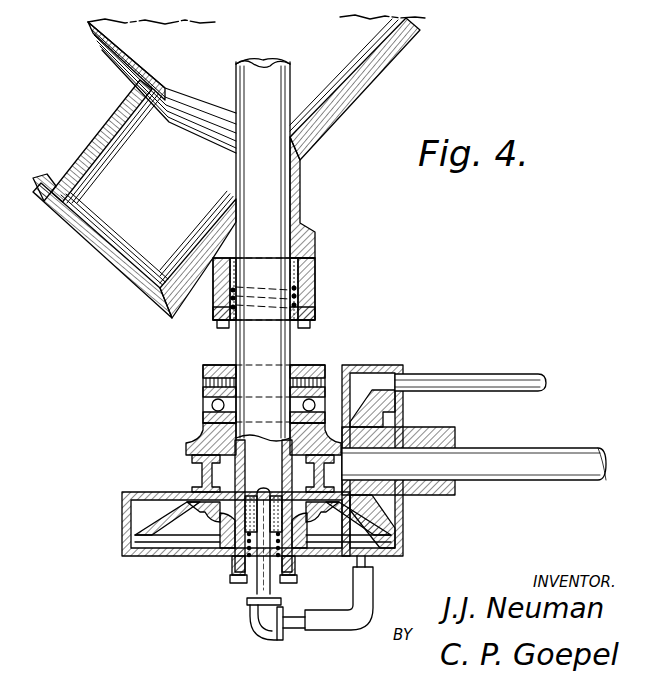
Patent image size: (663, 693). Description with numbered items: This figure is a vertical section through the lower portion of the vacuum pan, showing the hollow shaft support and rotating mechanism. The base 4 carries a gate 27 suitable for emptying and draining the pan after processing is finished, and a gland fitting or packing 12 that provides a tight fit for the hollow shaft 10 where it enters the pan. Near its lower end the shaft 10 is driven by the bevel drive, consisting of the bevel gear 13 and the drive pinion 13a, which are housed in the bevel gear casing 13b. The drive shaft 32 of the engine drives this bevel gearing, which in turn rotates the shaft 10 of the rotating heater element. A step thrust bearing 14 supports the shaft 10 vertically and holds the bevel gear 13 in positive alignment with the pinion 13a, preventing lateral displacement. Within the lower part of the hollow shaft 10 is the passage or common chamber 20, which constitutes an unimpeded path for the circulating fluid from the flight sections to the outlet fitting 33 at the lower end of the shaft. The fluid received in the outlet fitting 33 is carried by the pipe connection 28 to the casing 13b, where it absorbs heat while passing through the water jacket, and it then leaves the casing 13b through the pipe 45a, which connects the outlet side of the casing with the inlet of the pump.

The base 4 is at (386, 69).
The hollow shaft 10 is at (244, 75).
The passage 20 is at (266, 72).
The gland fitting or packing 12 is at (316, 286).
The gate 27 is at (122, 271).
The step thrust bearing 14 is at (203, 370).
The bevel gear casing 13b is at (401, 364).
The pipe 45a is at (528, 370).
The drive shaft 32 is at (580, 453).
The bevel gear 13 is at (152, 523).
The drive pinion 13a is at (383, 525).
The outlet fitting 33 is at (255, 576).
The pipe connection 28 is at (360, 587).